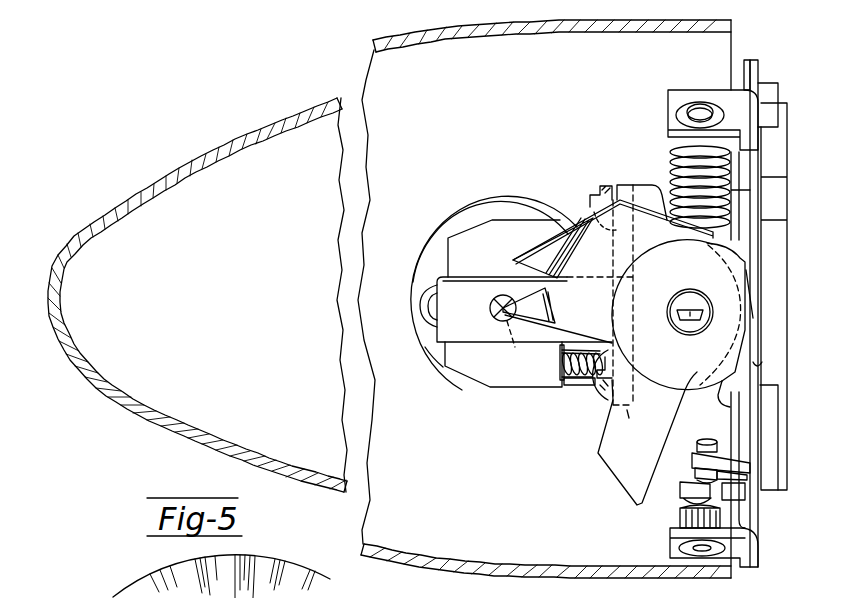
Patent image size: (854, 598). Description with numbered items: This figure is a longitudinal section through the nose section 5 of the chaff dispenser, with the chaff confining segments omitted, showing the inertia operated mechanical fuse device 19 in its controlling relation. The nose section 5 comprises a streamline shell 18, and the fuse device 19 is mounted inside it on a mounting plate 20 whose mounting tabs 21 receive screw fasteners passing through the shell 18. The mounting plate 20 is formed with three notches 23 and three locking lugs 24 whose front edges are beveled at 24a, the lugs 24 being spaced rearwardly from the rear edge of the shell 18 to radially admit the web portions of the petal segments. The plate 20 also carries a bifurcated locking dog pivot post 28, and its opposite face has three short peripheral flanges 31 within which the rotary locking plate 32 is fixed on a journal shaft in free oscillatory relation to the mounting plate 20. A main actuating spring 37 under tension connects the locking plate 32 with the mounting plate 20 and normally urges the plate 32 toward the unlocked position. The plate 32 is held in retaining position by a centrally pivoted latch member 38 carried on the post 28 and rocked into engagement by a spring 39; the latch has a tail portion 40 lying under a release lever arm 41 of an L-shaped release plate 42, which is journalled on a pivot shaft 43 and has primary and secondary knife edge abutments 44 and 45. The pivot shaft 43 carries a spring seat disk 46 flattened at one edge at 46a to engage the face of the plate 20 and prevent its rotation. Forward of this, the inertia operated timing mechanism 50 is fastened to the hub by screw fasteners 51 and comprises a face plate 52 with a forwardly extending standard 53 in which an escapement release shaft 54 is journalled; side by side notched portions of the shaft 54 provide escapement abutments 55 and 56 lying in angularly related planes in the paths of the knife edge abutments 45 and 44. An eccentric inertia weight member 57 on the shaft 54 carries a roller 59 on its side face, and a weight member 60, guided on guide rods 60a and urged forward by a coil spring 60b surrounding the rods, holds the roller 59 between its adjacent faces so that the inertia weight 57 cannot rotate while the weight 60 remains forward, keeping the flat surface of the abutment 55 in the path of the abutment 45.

The nose section 5 is at (197, 295).
The streamline shell 18 is at (150, 180).
The inertia operated mechanical fuse device 19 is at (622, 160).
The mounting plate 20 is at (753, 508).
The mounting tabs 21 is at (724, 96).
The notches 23 is at (766, 356).
The locking lugs 24 is at (757, 60).
The beveled front edges 24a is at (747, 80).
The locking dog pivot post 28 is at (724, 458).
The peripheral flanges 31 is at (770, 83).
The locking plate 32 is at (785, 130).
The main actuating spring 37 is at (680, 165).
The latch member 38 is at (697, 472).
The latch spring 39 is at (742, 460).
The tail portion 40 is at (684, 491).
The release lever arm 41 is at (618, 460).
The release plate 42 is at (640, 215).
The pivot shaft 43 is at (696, 336).
The primary knife edge abutment 44 is at (537, 311).
The secondary knife edge abutment 45 is at (548, 261).
The spring seat disk 46 is at (675, 246).
The flattened edge 46a is at (752, 292).
The inertia operated timing mechanism 50 is at (494, 191).
The screw fasteners 51 is at (596, 196).
The face plate 52 is at (602, 311).
The standard 53 is at (458, 326).
The escapement release shaft 54 is at (503, 296).
The escapement abutment 55 is at (496, 308).
The escapement abutment 56 is at (520, 348).
The inertia weight member 57 is at (544, 309).
The roller 59 is at (425, 292).
The weight member 60 is at (517, 223).
The guide rods 60a is at (561, 364).
The coil spring 60b is at (580, 386).